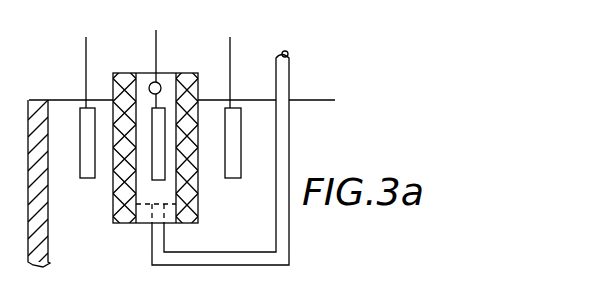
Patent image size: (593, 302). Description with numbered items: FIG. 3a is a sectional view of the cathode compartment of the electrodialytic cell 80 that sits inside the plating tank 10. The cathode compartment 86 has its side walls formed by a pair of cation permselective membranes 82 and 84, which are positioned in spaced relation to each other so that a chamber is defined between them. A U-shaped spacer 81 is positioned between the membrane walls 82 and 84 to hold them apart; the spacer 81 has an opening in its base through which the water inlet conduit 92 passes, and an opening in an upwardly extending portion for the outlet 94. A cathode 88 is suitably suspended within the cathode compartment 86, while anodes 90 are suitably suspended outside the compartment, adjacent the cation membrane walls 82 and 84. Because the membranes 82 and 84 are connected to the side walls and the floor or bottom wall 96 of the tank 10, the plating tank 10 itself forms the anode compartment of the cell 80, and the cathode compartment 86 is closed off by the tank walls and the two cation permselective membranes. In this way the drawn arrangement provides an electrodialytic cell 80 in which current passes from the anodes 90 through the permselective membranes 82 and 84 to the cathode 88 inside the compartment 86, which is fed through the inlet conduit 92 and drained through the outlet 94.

The plating tank 10 is at (298, 93).
The electrodialytic cell 80 is at (163, 126).
The U-shaped spacer 81 is at (171, 80).
The cation permselective membrane 82 is at (125, 90).
The cation permselective membrane 84 is at (195, 88).
The cathode compartment 86 is at (163, 74).
The cathode 88 is at (155, 158).
The anodes 90 is at (85, 179).
The water inlet conduit 92 is at (290, 143).
The outlet 94 is at (148, 86).
The bottom wall 96 is at (103, 0).